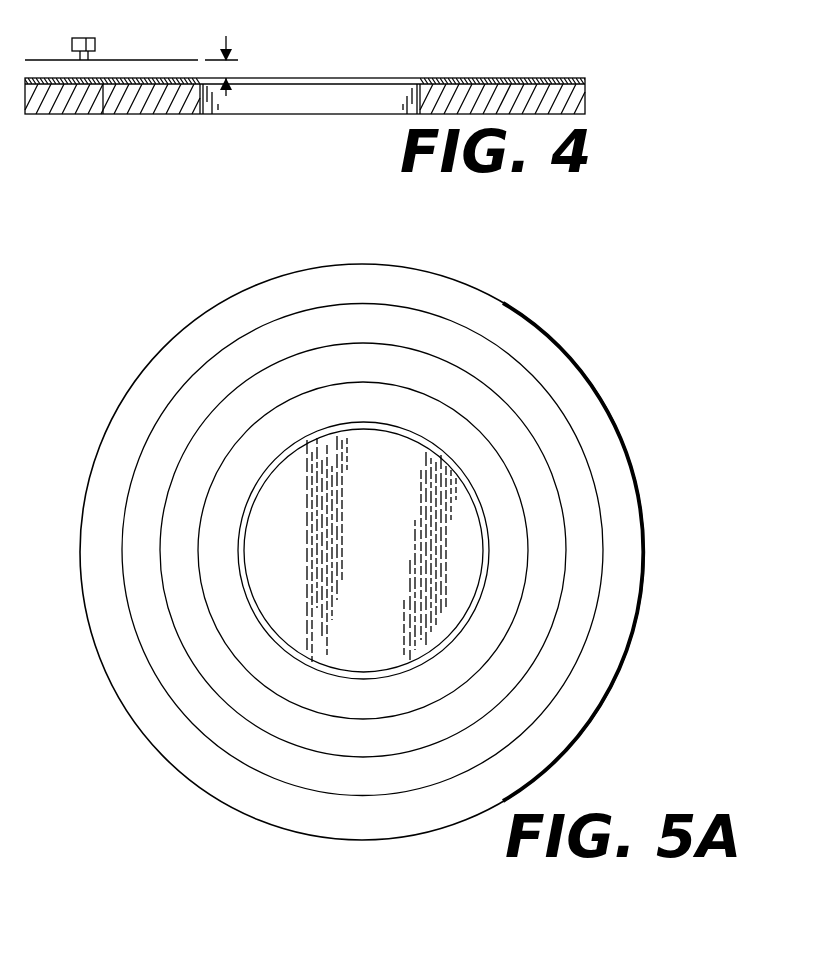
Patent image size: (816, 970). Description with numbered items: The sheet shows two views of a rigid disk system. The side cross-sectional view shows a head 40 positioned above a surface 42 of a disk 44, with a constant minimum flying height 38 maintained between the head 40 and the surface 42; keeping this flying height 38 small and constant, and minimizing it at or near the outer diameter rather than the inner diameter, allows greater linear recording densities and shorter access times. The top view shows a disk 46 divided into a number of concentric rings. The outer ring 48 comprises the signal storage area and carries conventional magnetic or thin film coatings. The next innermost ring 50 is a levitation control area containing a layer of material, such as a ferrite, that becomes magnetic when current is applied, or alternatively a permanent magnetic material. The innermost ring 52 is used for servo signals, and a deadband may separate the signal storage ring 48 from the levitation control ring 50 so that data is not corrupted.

In FIG. 4, the flying height 38 is at (197, 48).
In FIG. 4, the head 40 is at (90, 38).
In FIG. 4, the surface 42 is at (104, 114).
In FIG. 4, the disk 44 is at (72, 106).
In FIG. 5A, the disk 46 is at (648, 481).
In FIG. 5A, the outer ring 48 is at (593, 419).
In FIG. 5A, the levitation control ring 50 is at (530, 392).
In FIG. 5A, the innermost ring 52 is at (460, 385).